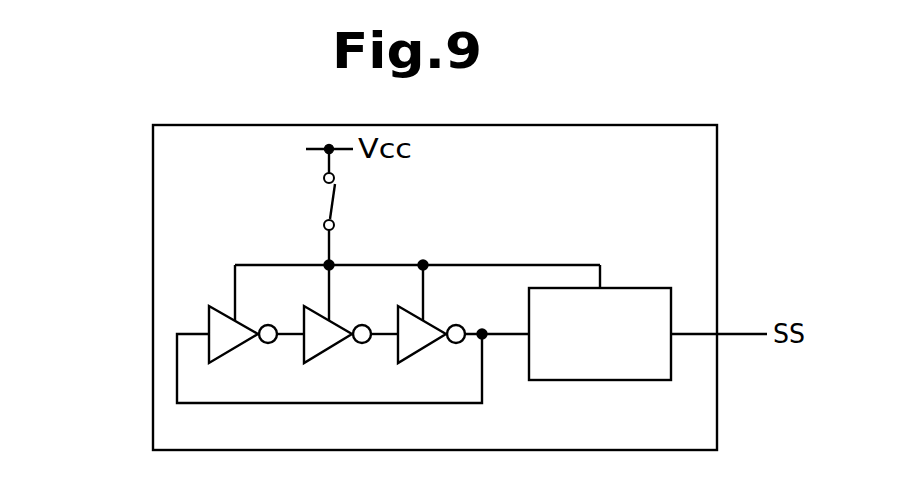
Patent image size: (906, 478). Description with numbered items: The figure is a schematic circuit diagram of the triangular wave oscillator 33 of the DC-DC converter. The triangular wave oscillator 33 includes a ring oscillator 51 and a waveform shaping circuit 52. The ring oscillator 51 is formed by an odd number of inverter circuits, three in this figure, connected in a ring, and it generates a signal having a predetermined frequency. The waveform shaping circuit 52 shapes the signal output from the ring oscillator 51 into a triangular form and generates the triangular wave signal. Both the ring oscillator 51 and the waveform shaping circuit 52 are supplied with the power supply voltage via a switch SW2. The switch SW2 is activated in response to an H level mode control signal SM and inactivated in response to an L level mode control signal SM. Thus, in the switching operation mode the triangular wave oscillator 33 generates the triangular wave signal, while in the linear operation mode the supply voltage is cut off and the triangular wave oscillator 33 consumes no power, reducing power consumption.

The triangular wave oscillator 33 is at (717, 165).
The ring oscillator 51 is at (452, 257).
The waveform shaping circuit 52 is at (652, 286).
The switch SW2 is at (316, 207).
The mode control signal SM is at (365, 201).